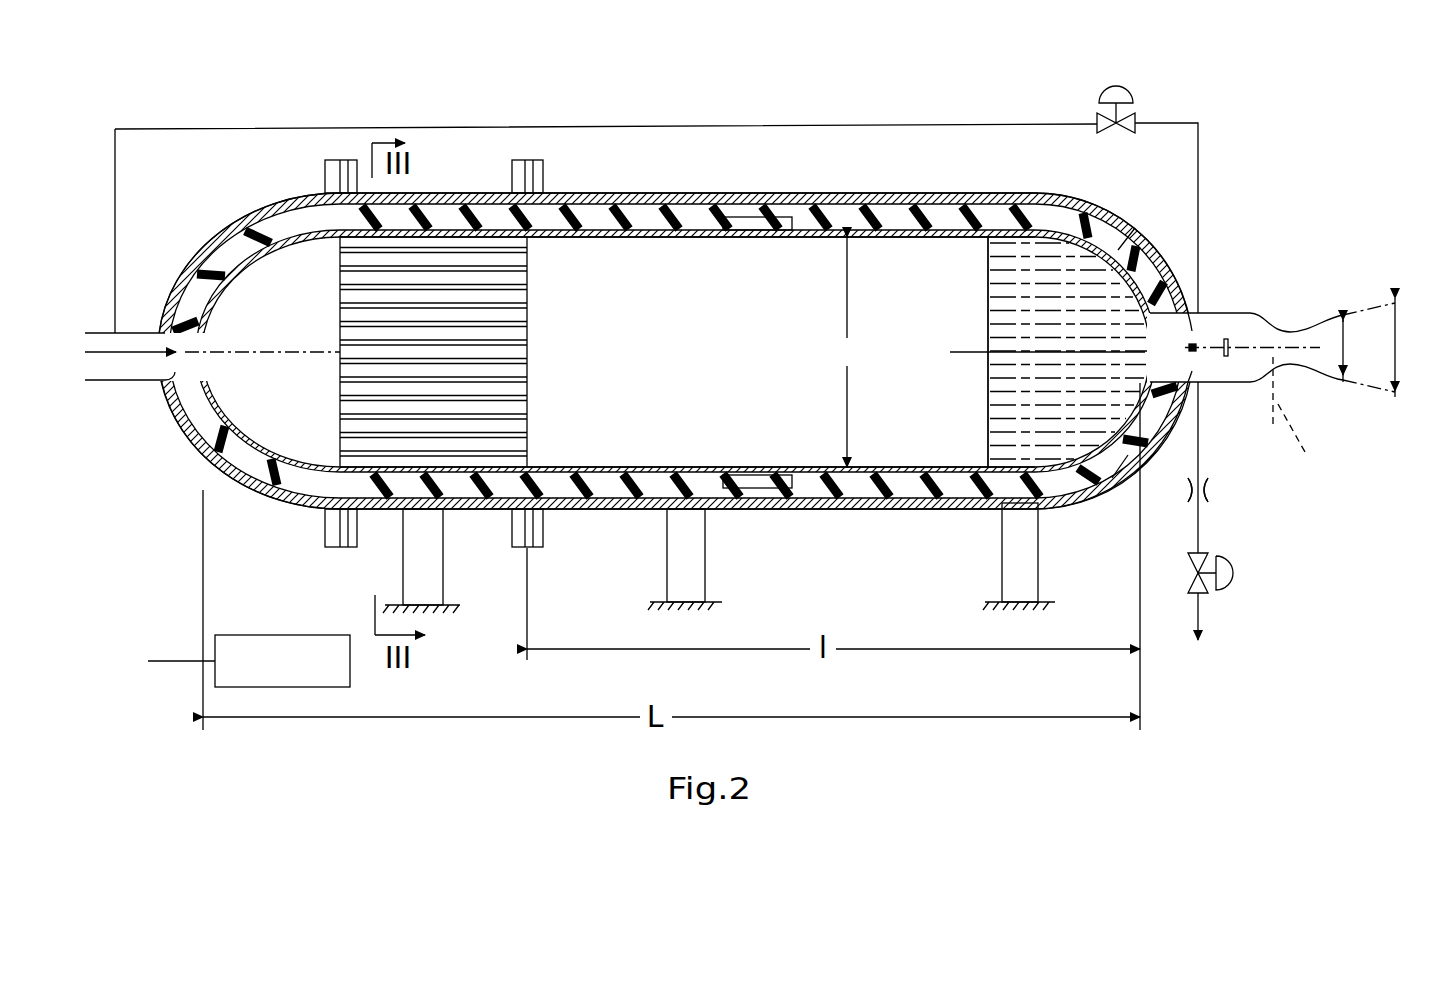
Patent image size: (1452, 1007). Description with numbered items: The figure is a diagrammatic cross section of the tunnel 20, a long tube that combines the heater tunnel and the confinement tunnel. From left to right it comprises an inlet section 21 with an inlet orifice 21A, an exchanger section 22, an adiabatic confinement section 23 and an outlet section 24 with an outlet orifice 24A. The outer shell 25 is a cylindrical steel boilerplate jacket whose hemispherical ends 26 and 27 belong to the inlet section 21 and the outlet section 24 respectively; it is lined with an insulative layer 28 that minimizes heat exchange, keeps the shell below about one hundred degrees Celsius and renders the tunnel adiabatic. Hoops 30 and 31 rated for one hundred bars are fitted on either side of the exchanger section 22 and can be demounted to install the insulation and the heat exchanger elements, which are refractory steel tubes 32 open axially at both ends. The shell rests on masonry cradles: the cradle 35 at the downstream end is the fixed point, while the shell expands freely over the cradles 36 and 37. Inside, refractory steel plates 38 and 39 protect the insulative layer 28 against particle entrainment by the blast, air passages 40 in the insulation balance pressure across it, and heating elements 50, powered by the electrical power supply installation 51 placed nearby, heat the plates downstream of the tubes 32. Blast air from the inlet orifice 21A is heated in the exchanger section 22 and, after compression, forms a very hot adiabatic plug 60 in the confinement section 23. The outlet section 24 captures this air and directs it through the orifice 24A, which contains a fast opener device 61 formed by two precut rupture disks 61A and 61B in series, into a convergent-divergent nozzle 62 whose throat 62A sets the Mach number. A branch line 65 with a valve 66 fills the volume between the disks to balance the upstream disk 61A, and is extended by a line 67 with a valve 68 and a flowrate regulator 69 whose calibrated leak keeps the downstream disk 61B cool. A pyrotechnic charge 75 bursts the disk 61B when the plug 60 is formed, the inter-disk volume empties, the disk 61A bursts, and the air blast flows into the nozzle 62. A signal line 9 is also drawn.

The signal line 9 is at (162, 661).
The tunnel 20 is at (230, 503).
The inlet section 21 is at (237, 420).
The inlet orifice 21A is at (165, 372).
The exchanger section 22 is at (478, 302).
The adiabatic confinement section 23 is at (796, 352).
The outlet section 24 is at (1135, 357).
The outlet orifice 24A is at (1210, 318).
The outer shell 25 is at (762, 195).
The hemispherical end 26 is at (228, 228).
The hemispherical end 27 is at (1128, 225).
The insulative layer 28 is at (880, 200).
The hoop 30 is at (322, 170).
The hoop 31 is at (548, 170).
The refractory steel tubes 32 is at (527, 423).
The cradle 35 is at (1000, 543).
The cradle 36 is at (700, 580).
The cradle 37 is at (443, 572).
The refractory steel plate 38 is at (895, 250).
The refractory steel plate 39 is at (1065, 240).
The air passages 40 is at (262, 242).
The heating elements 50 is at (740, 230).
The electrical power supply installation 51 is at (282, 661).
The adiabatic plug 60 is at (1067, 352).
The fast opener device 61 is at (1243, 404).
The upstream rupture disk 61A is at (1169, 490).
The downstream rupture disk 61B is at (1228, 385).
The convergent-divergent nozzle 62 is at (1245, 300).
The throat 62A is at (1290, 368).
The branch line 65 is at (705, 126).
The valve 66 is at (1118, 113).
The line 67 is at (1193, 530).
The valve 68 is at (1210, 582).
The flowrate regulator 69 is at (1206, 487).
The pyrotechnic charge 75 is at (1232, 340).